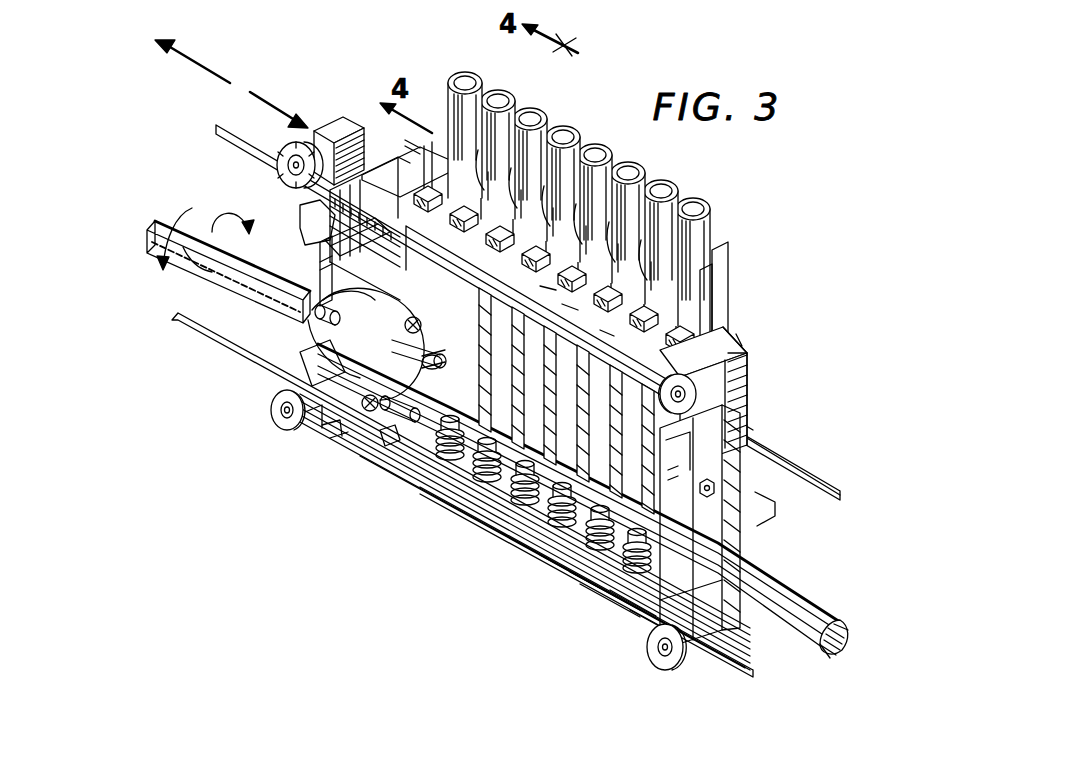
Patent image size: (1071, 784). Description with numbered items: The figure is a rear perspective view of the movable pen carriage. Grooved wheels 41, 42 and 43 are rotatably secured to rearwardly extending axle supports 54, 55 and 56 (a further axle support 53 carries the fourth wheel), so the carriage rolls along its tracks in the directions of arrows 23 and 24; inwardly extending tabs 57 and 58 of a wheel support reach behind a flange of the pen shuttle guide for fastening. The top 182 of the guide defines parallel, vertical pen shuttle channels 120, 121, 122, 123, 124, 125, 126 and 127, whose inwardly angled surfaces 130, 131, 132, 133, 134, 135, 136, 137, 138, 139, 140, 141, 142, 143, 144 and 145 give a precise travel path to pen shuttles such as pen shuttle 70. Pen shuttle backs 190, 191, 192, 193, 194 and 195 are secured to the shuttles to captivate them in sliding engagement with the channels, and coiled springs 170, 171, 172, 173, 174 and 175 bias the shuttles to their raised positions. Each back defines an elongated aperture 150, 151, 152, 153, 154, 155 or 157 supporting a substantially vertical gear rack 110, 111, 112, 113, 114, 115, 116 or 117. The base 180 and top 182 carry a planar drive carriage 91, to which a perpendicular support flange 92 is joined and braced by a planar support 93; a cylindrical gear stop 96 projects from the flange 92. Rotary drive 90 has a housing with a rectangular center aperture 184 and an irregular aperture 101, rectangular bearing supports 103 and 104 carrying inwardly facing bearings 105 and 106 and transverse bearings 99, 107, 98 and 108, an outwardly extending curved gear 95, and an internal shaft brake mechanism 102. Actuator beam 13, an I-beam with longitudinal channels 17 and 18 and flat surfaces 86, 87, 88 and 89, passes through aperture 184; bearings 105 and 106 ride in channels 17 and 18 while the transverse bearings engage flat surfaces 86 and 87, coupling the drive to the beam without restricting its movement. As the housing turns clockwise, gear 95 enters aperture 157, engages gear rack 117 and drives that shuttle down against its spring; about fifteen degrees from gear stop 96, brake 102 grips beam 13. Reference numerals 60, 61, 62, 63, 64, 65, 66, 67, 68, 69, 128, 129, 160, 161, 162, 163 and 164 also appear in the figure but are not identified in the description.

The actuator beam 13 is at (766, 579).
The longitudinal channel 17 is at (840, 622).
The longitudinal channel 18 is at (826, 660).
The arrow 23 is at (286, 104).
The arrow 24 is at (220, 64).
The grooved wheel 41 is at (306, 140).
The grooved wheel 42 is at (276, 426).
The grooved wheel 43 is at (662, 672).
The axle support 53 is at (750, 386).
The axle support 54 is at (343, 128).
The axle support 55 is at (278, 388).
The axle support 56 is at (732, 674).
The inwardly extending tab 57 is at (762, 500).
The inwardly extending tab 58 is at (735, 620).
The tube 60 is at (698, 200).
The tube 61 is at (663, 182).
The tube 62 is at (630, 164).
The tube 63 is at (598, 146).
The tube 64 is at (566, 128).
The tube 65 is at (533, 110).
The tube 66 is at (500, 92).
The tube 67 is at (470, 72).
The shaft 68 is at (646, 622).
The pulley 69 is at (692, 432).
The pen shuttle 70 is at (735, 331).
The flat surface 86 is at (846, 628).
The flat surface 87 is at (834, 652).
The flat surface 88 is at (826, 620).
The flat surface 89 is at (824, 654).
The rotary drive 90 is at (330, 434).
The drive carriage 91 is at (300, 225).
The support flange 92 is at (302, 309).
The support 93 is at (320, 259).
The curved gear 95 is at (380, 261).
The gear stop 96 is at (314, 321).
The transversely facing bearing 98 is at (364, 431).
The transversely facing bearing 99 is at (405, 354).
The irregularly shaped aperture 101 is at (328, 283).
The shaft brake mechanism 102 is at (306, 380).
The bearing support 103 is at (384, 291).
The bearing support 104 is at (384, 448).
The inwardly facing bearing 105 is at (388, 319).
The inwardly facing bearing 106 is at (334, 443).
The transversely facing bearing 107 is at (430, 369).
The transversely facing bearing 108 is at (402, 421).
The gear rack 110 is at (708, 416).
The gear rack 111 is at (704, 402).
The gear rack 112 is at (614, 329).
The gear rack 113 is at (592, 305).
The gear rack 114 is at (536, 271).
The gear rack 115 is at (488, 247).
The gear rack 116 is at (428, 212).
The gear rack 117 is at (398, 227).
The pen shuttle channel 120 is at (748, 359).
The pen shuttle channel 121 is at (666, 343).
The pen shuttle channel 122 is at (630, 321).
The pen shuttle channel 123 is at (570, 303).
The pen shuttle channel 124 is at (556, 287).
The pen shuttle channel 125 is at (522, 263).
The pen shuttle channel 126 is at (458, 231).
The pen shuttle channel 127 is at (414, 233).
The rotation arrow 128 is at (242, 227).
The rotation arrow 129 is at (188, 217).
The angled surface 130 is at (705, 288).
The angled surface 131 is at (712, 306).
The angled surface 132 is at (640, 292).
The angled surface 133 is at (639, 270).
The angled surface 134 is at (607, 266).
The angled surface 135 is at (604, 246).
The angled surface 136 is at (573, 252).
The angled surface 137 is at (572, 230).
The angled surface 138 is at (539, 236).
The angled surface 139 is at (542, 215).
The angled surface 140 is at (512, 210).
The angled surface 141 is at (511, 190).
The angled surface 142 is at (478, 194).
The angled surface 143 is at (480, 168).
The angled surface 144 is at (424, 148).
The angled surface 145 is at (380, 182).
The elongated aperture 150 is at (632, 528).
The elongated aperture 151 is at (594, 505).
The elongated aperture 152 is at (558, 482).
The elongated aperture 153 is at (520, 460).
The elongated aperture 154 is at (484, 438).
The elongated aperture 155 is at (448, 416).
The elongated aperture 157 is at (380, 212).
The plate 160 is at (695, 541).
The rail 161 is at (600, 590).
The rail 162 is at (564, 553).
The rail 163 is at (521, 532).
The rail 164 is at (484, 506).
The coiled spring 170 is at (612, 612).
The coiled spring 171 is at (570, 584).
The coiled spring 172 is at (540, 560).
The coiled spring 173 is at (492, 542).
The coiled spring 174 is at (446, 524).
The coiled spring 175 is at (447, 495).
The base 180 is at (650, 632).
The top 182 is at (410, 150).
The center aperture 184 is at (320, 419).
The pen shuttle back 190 is at (646, 499).
The pen shuttle back 191 is at (614, 481).
The pen shuttle back 192 is at (582, 463).
The pen shuttle back 193 is at (548, 447).
The pen shuttle back 194 is at (516, 428).
The pen shuttle back 195 is at (486, 412).